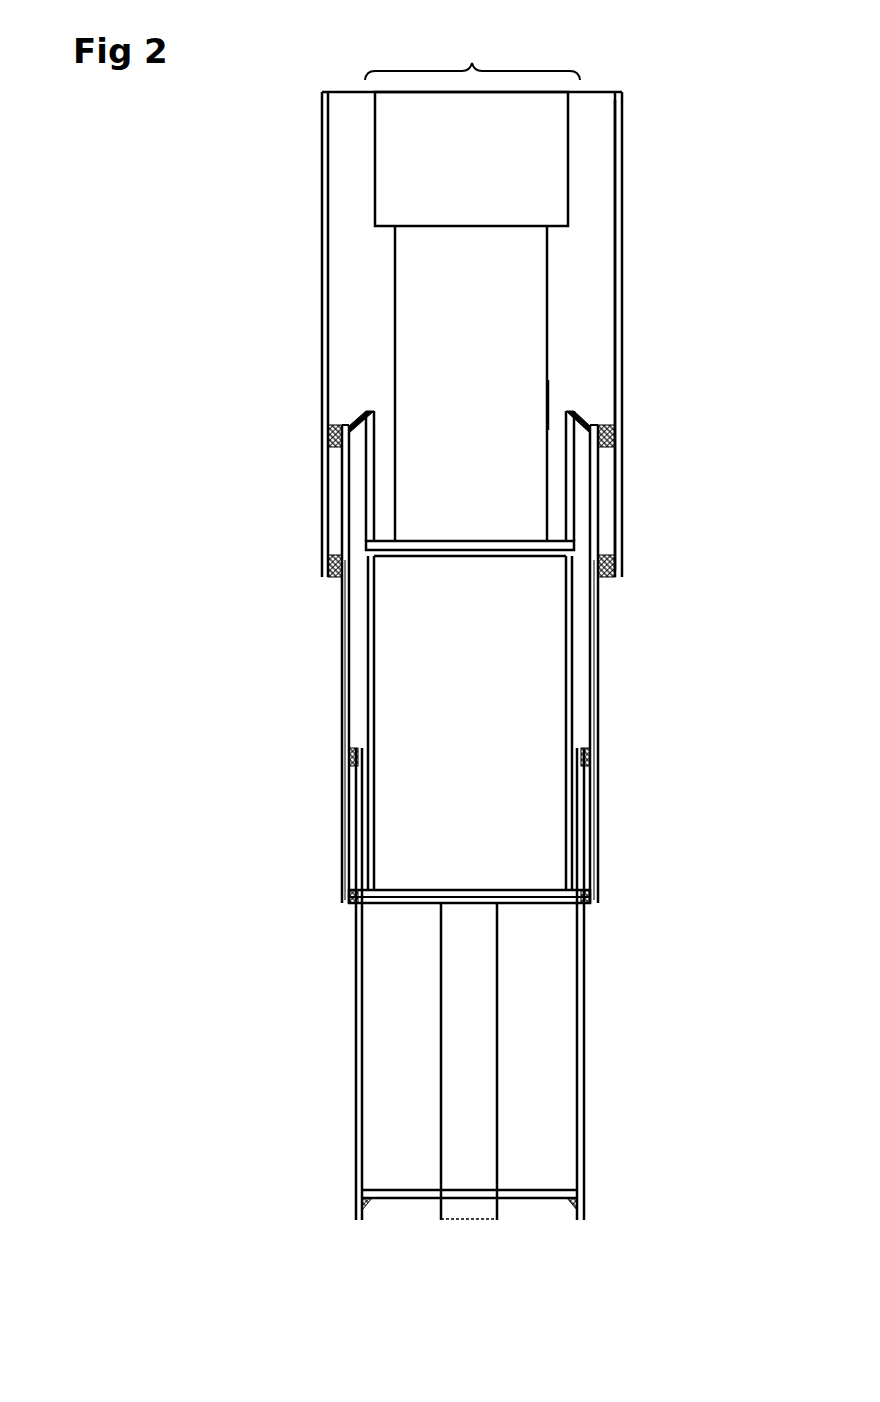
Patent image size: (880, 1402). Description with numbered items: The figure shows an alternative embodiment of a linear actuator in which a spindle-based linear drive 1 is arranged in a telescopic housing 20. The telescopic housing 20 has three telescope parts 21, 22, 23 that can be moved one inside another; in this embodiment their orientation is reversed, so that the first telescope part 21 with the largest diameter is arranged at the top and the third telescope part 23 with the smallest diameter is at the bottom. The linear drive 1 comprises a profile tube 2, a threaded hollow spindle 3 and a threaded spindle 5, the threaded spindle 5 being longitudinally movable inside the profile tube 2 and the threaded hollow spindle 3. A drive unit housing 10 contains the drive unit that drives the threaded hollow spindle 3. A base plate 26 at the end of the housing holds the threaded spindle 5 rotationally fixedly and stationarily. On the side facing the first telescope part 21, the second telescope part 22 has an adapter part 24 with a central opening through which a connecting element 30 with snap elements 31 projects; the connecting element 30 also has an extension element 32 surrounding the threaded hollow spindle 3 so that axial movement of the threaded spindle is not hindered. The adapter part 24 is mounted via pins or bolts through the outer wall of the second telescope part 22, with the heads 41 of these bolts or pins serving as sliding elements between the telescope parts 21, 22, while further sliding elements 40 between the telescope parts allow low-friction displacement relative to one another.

The spindle-based linear drive 1 is at (472, 52).
The profile tube 2 is at (390, 677).
The threaded hollow spindle 3 is at (418, 330).
The threaded spindle 5 is at (460, 1087).
The drive unit housing 10 is at (550, 162).
The telescopic housing 20 is at (300, 173).
The first telescope part 21 is at (623, 335).
The second telescope part 22 is at (600, 715).
The third telescope part 23 is at (587, 1062).
The adapter part 24 is at (338, 465).
The base plate 26 is at (530, 1196).
The connecting element 30 is at (569, 380).
The snap elements 31 is at (355, 407).
The extension element 32 is at (570, 487).
The sliding elements 40 is at (326, 578).
The heads of the bolts or pins 41 is at (330, 435).